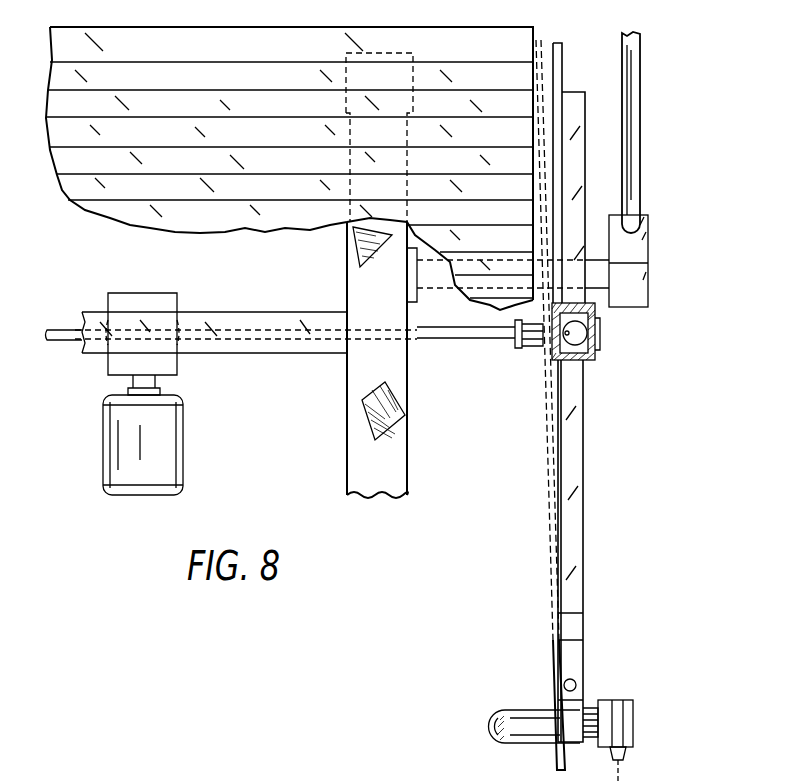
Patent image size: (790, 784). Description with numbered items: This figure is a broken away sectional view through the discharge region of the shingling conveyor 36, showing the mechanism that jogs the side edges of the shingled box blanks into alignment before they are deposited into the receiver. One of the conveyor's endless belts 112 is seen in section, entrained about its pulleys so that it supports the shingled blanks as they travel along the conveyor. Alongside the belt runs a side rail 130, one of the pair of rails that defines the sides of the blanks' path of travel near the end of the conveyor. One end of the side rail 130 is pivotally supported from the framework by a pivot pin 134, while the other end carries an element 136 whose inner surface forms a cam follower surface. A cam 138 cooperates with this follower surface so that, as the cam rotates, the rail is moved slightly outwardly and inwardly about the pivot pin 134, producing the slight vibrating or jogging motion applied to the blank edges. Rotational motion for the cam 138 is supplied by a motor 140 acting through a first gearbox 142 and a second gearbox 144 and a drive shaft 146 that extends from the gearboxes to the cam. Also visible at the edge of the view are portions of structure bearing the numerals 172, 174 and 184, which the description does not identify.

The shingling conveyor 36 is at (350, 512).
The endless belt 112 is at (392, 442).
The side rail 130 is at (563, 503).
The pivot pin 134 is at (576, 682).
The element 136 is at (596, 360).
The cam 138 is at (588, 333).
The motor 140 is at (173, 461).
The gearbox 142 is at (163, 296).
The gearbox 144 is at (540, 353).
The drive shaft 146 is at (455, 337).
The element 172 is at (401, 775).
The element 174 is at (335, 775).
The element 184 is at (277, 783).